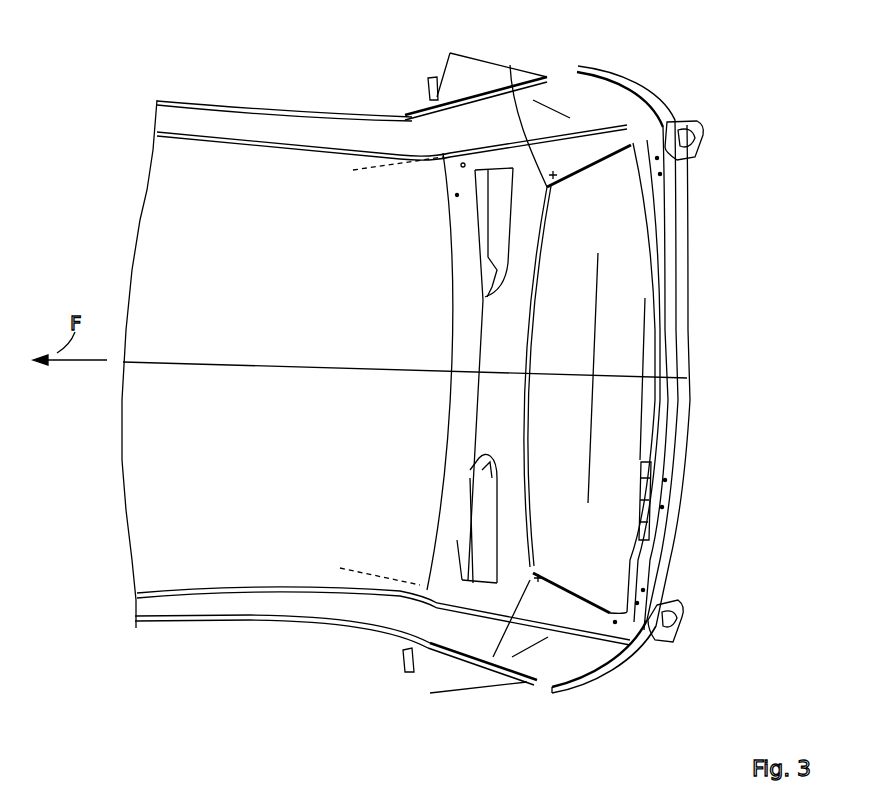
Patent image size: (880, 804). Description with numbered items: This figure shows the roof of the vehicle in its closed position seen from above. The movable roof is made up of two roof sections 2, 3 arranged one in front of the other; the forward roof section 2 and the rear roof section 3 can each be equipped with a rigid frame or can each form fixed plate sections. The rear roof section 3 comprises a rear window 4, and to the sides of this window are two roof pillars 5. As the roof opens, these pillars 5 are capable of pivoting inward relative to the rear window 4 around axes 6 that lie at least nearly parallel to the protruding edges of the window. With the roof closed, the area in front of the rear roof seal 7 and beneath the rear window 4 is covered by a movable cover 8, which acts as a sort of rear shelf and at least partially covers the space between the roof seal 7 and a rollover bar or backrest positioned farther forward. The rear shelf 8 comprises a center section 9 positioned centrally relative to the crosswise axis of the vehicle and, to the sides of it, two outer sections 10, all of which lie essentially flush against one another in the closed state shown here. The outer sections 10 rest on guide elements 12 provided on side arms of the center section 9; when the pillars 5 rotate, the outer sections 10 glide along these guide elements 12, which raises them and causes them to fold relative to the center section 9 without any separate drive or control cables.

The roof section 2 is at (301, 423).
The rear roof section 3 is at (560, 152).
The rear window 4 is at (511, 339).
The roof pillar 5 is at (500, 113).
The axis 6 is at (745, 109).
The rear roof seal 7 is at (685, 373).
The movable cover 8 is at (618, 347).
The center section 9 is at (630, 243).
The outer section 10 is at (577, 163).
The guide element 12 is at (533, 570).